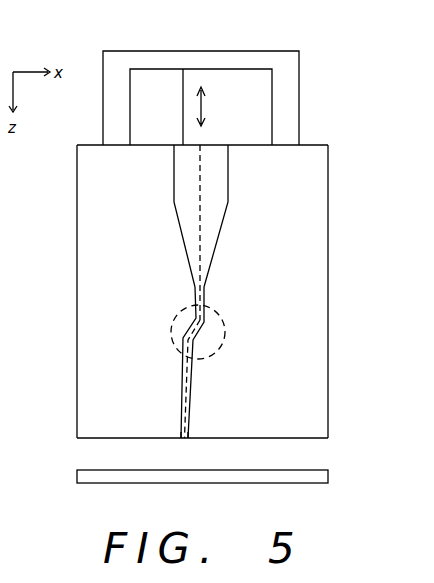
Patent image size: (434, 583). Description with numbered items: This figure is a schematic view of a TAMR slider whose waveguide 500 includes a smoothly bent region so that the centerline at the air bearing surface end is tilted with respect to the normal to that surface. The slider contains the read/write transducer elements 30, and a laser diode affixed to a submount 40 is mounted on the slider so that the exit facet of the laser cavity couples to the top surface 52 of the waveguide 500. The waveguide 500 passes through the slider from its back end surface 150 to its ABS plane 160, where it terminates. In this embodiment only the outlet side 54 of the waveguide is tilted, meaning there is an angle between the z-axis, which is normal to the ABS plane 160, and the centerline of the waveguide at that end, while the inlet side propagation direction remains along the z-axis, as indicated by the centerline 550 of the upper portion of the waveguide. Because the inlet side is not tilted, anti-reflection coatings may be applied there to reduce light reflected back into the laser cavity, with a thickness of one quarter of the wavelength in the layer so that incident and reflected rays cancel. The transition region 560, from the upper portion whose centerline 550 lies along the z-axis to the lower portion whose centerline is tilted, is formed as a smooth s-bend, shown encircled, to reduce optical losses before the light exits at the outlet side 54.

The read/write transducer elements 30 is at (259, 87).
The submount 40 is at (285, 115).
The top surface of waveguide 52 is at (224, 145).
The outlet side of waveguide 54 is at (185, 438).
The back end surface of slider 150 is at (110, 147).
The ABS plane 160 is at (122, 437).
The waveguide 500 is at (208, 228).
The centerline of upper portion of waveguide 550 is at (200, 172).
The transition region 560 is at (171, 335).